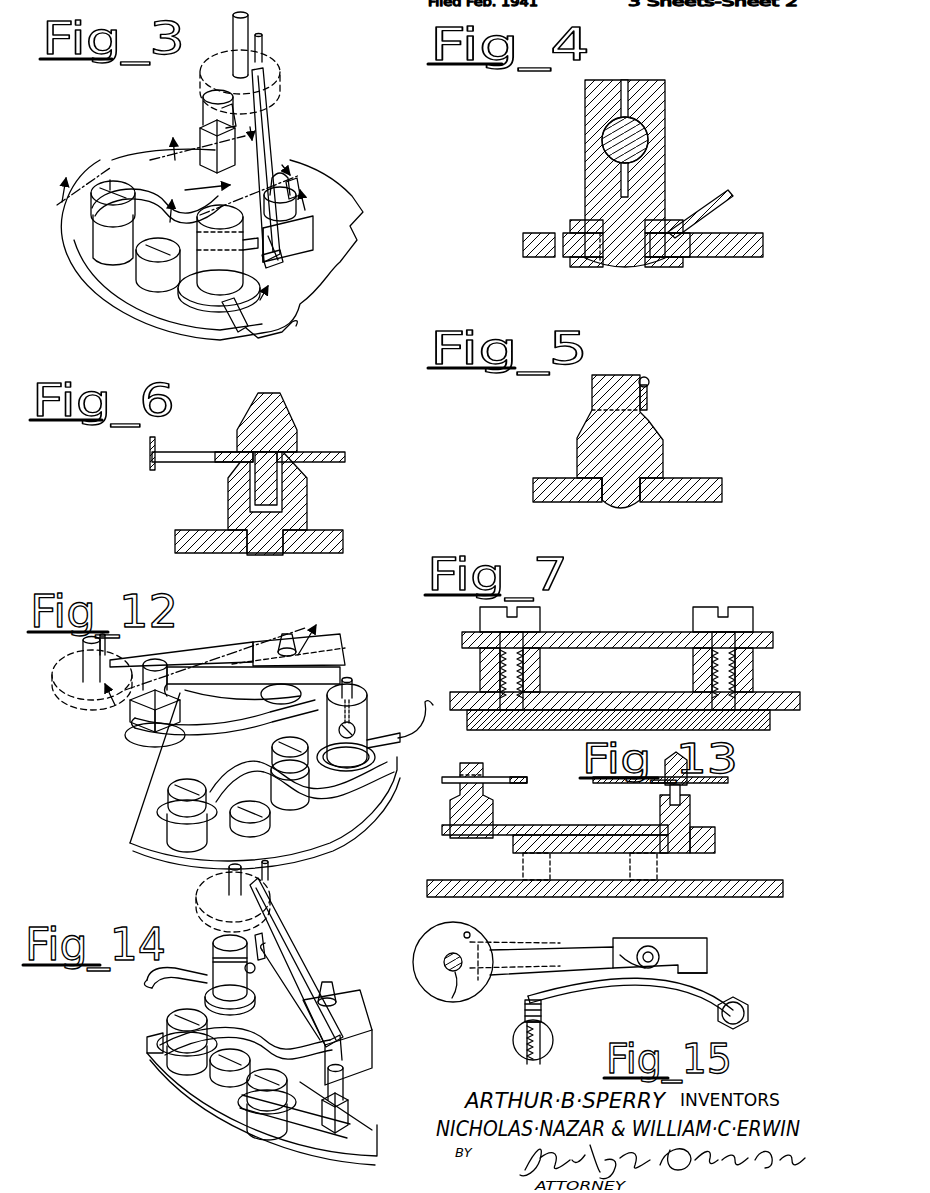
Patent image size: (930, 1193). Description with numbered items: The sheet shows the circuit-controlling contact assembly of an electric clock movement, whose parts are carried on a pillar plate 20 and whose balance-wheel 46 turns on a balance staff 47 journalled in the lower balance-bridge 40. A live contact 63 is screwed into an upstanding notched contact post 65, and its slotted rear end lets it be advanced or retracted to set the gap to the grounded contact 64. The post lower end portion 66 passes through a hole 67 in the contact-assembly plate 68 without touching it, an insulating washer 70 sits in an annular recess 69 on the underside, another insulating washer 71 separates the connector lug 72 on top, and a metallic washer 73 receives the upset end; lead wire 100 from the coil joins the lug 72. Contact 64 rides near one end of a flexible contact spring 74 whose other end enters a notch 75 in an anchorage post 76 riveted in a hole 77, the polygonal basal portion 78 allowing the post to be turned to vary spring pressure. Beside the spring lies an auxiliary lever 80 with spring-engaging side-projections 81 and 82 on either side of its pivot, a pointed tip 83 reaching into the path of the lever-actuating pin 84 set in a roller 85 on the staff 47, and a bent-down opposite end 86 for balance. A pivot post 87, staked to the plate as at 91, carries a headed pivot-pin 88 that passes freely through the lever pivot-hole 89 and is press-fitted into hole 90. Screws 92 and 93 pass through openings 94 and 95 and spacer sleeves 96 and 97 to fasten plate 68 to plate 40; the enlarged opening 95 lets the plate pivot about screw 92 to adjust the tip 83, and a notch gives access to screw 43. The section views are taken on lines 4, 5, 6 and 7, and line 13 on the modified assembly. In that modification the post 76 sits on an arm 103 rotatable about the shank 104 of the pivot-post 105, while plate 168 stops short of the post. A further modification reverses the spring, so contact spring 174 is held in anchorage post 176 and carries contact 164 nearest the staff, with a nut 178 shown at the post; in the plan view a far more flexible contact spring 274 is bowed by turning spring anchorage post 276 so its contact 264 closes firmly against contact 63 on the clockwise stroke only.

In FIG. 3, the section line 4- 4 is at (270, 293).
In FIG. 3, the section line 5- 5 is at (204, 133).
In FIG. 3, the section line 6- 6 is at (252, 186).
In FIG. 3, the section line 7- 7 is at (117, 188).
In FIG. 12, the section line 13- 13 is at (224, 652).
In FIG. 7, the pillar plate 20 is at (760, 726).
In FIG. 3, the lower balance-bridge 40 is at (78, 230).
In FIG. 7, the lower balance-bridge 40 is at (622, 704).
In FIG. 13, the lower balance-bridge 40 is at (755, 880).
In FIG. 12, the lower balance-bridge 40 is at (150, 829).
In FIG. 14, the lower balance-bridge 40 is at (262, 1099).
In FIG. 3, the screw 43 is at (135, 270).
In FIG. 12, the screw 43 is at (268, 824).
In FIG. 14, the screw 43 is at (232, 1077).
In FIG. 3, the balance-wheel 46 is at (216, 182).
In FIG. 3, the balance staff 47 is at (250, 26).
In FIG. 12, the balance staff 47 is at (83, 653).
In FIG. 14, the balance staff 47 is at (226, 886).
In FIG. 15, the balance staff 47 is at (447, 975).
In FIG. 3, the live contact 63 is at (265, 272).
In FIG. 4, the live contact 63 is at (620, 152).
In FIG. 12, the live contact 63 is at (358, 691).
In FIG. 14, the live contact 63 is at (258, 985).
In FIG. 15, the live contact 63 is at (525, 1020).
In FIG. 3, the grounded contact 64 is at (288, 246).
In FIG. 12, the grounded contact 64 is at (355, 669).
In FIG. 3, the contact post 65 is at (200, 272).
In FIG. 4, the contact post 65 is at (595, 133).
In FIG. 12, the contact post 65 is at (368, 710).
In FIG. 14, the contact post 65 is at (215, 950).
In FIG. 15, the contact post 65 is at (513, 1046).
In FIG. 4, the post lower end portion 66 is at (625, 250).
In FIG. 4, the hole 67 is at (572, 232).
In FIG. 3, the contact-assembly plate 68 is at (180, 158).
In FIG. 4, the contact-assembly plate 68 is at (536, 245).
In FIG. 5, the contact-assembly plate 68 is at (545, 488).
In FIG. 6, the contact-assembly plate 68 is at (178, 536).
In FIG. 7, the contact-assembly plate 68 is at (642, 640).
In FIG. 4, the annular recess 69 is at (675, 257).
In FIG. 4, the insulating washer 70 is at (575, 258).
In FIG. 3, the insulating washer 71 is at (195, 298).
In FIG. 4, the insulating washer 71 is at (662, 235).
In FIG. 3, the connector lug 72 is at (236, 326).
In FIG. 4, the connector lug 72 is at (680, 216).
In FIG. 4, the metallic washer 73 is at (600, 262).
In FIG. 3, the contact spring 74 is at (200, 110).
In FIG. 5, the contact spring 74 is at (648, 398).
In FIG. 6, the contact spring 74 is at (150, 456).
In FIG. 13, the contact spring 74 is at (516, 777).
In FIG. 12, the contact spring 74 is at (232, 684).
In FIG. 5, the notch 75 is at (642, 378).
In FIG. 3, the anchorage post 76 is at (208, 96).
In FIG. 5, the anchorage post 76 is at (612, 395).
In FIG. 12, the anchorage post 76 is at (145, 700).
In FIG. 5, the hole 77 is at (600, 496).
In FIG. 3, the polygonal basal portion 78 is at (182, 137).
In FIG. 5, the polygonal basal portion 78 is at (580, 452).
In FIG. 13, the polygonal basal portion 78 is at (452, 810).
In FIG. 12, the polygonal basal portion 78 is at (130, 721).
In FIG. 3, the auxiliary lever 80 is at (280, 136).
In FIG. 6, the auxiliary lever 80 is at (346, 456).
In FIG. 13, the auxiliary lever 80 is at (641, 783).
In FIG. 12, the auxiliary lever 80 is at (263, 645).
In FIG. 14, the auxiliary lever 80 is at (302, 960).
In FIG. 15, the auxiliary lever 80 is at (632, 946).
In FIG. 3, the side-projection 81 is at (290, 162).
In FIG. 6, the side-projection 81 is at (176, 452).
In FIG. 14, the side-projection 81 is at (302, 976).
In FIG. 15, the side-projection 81 is at (612, 960).
In FIG. 3, the side-projection 82 is at (300, 191).
In FIG. 14, the side-projection 82 is at (352, 1015).
In FIG. 15, the side-projection 82 is at (692, 980).
In FIG. 3, the pointed tip 83 is at (262, 72).
In FIG. 13, the pointed tip 83 is at (466, 780).
In FIG. 12, the pointed tip 83 is at (152, 657).
In FIG. 14, the pointed tip 83 is at (268, 902).
In FIG. 15, the pointed tip 83 is at (506, 946).
In FIG. 3, the lever-actuating pin 84 is at (265, 44).
In FIG. 12, the lever-actuating pin 84 is at (106, 646).
In FIG. 14, the lever-actuating pin 84 is at (269, 873).
In FIG. 15, the lever-actuating pin 84 is at (465, 932).
In FIG. 3, the roller 85 is at (226, 55).
In FIG. 12, the roller 85 is at (76, 690).
In FIG. 14, the roller 85 is at (200, 895).
In FIG. 15, the roller 85 is at (432, 940).
In FIG. 3, the opposite end 86 is at (306, 240).
In FIG. 6, the pivot post 87 is at (236, 505).
In FIG. 3, the pivot-pin 88 is at (320, 170).
In FIG. 6, the pivot-pin 88 is at (260, 482).
In FIG. 13, the pivot-pin 88 is at (673, 760).
In FIG. 12, the pivot-pin 88 is at (290, 634).
In FIG. 14, the pivot-pin 88 is at (334, 985).
In FIG. 15, the pivot-pin 88 is at (660, 950).
In FIG. 6, the lever pivot-hole 89 is at (300, 452).
In FIG. 6, the hole 90 is at (302, 500).
In FIG. 6, the riveted or staked portion 91 is at (256, 556).
In FIG. 3, the screw 92 is at (110, 180).
In FIG. 7, the screw 92 is at (490, 612).
In FIG. 12, the screw 92 is at (166, 782).
In FIG. 14, the screw 92 is at (176, 1013).
In FIG. 3, the screw 93 is at (207, 222).
In FIG. 7, the screw 93 is at (742, 626).
In FIG. 12, the screw 93 is at (272, 746).
In FIG. 14, the screw 93 is at (282, 1087).
In FIG. 7, the opening 94 is at (533, 654).
In FIG. 7, the opening 95 is at (750, 652).
In FIG. 12, the opening 95 is at (347, 810).
In FIG. 14, the opening 95 is at (274, 1110).
In FIG. 3, the spacer sleeve 96 is at (95, 250).
In FIG. 7, the spacer sleeve 96 is at (486, 670).
In FIG. 13, the spacer sleeve 96 is at (522, 866).
In FIG. 12, the spacer sleeve 96 is at (206, 826).
In FIG. 14, the spacer sleeve 96 is at (170, 1060).
In FIG. 7, the spacer sleeve 97 is at (700, 670).
In FIG. 13, the spacer sleeve 97 is at (640, 866).
In FIG. 12, the spacer sleeve 97 is at (276, 783).
In FIG. 14, the spacer sleeve 97 is at (255, 1128).
In FIG. 3, the lead wire 100 is at (262, 340).
In FIG. 12, the lead wire 100 is at (405, 740).
In FIG. 14, the lead wire 100 is at (148, 979).
In FIG. 13, the arm 103 is at (582, 827).
In FIG. 12, the arm 103 is at (246, 716).
In FIG. 13, the shank 104 is at (678, 858).
In FIG. 13, the pivot-post 105 is at (692, 810).
In FIG. 12, the pivot-post 105 is at (296, 705).
In FIG. 14, the contact 164 is at (252, 938).
In FIG. 13, the contact-assembly plate 168 is at (512, 844).
In FIG. 12, the contact-assembly plate 168 is at (200, 758).
In FIG. 14, the contact spring 174 is at (272, 1035).
In FIG. 14, the anchorage post 176 is at (323, 1080).
In FIG. 14, the nut 178 is at (350, 1115).
In FIG. 15, the contact 264 is at (525, 1003).
In FIG. 15, the contact spring 274 is at (582, 996).
In FIG. 15, the spring anchorage post 276 is at (718, 1013).